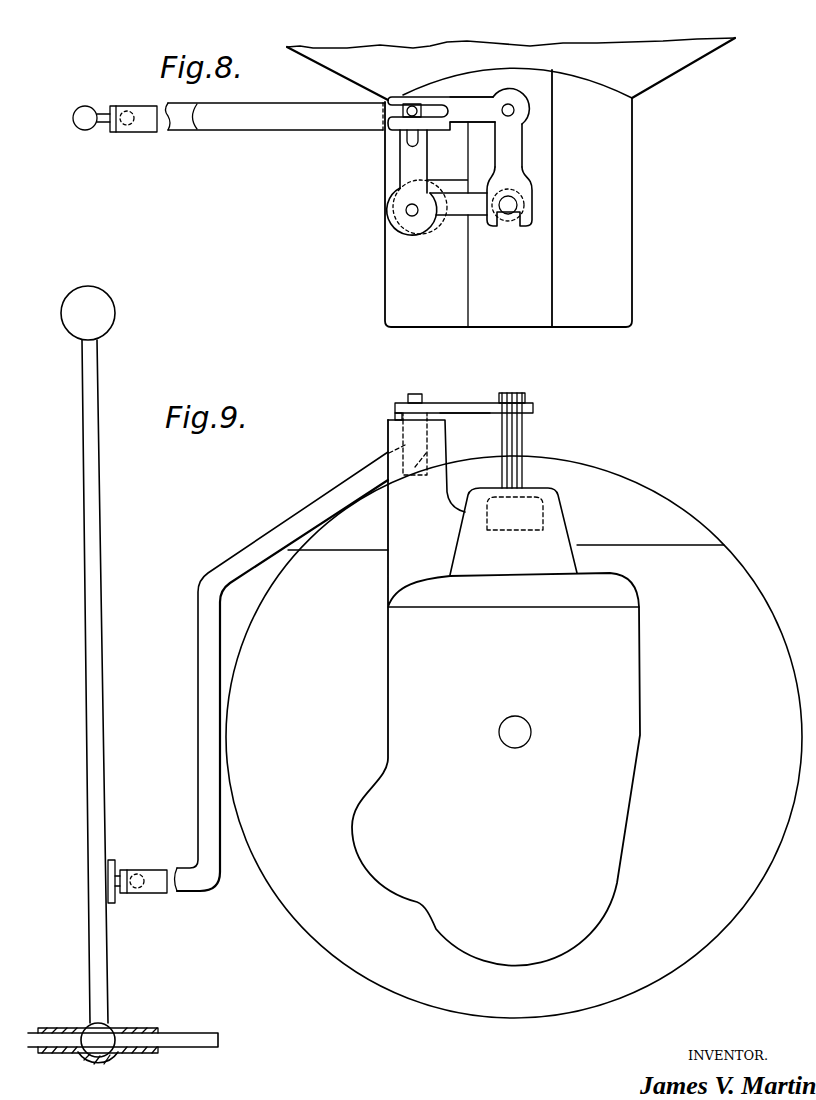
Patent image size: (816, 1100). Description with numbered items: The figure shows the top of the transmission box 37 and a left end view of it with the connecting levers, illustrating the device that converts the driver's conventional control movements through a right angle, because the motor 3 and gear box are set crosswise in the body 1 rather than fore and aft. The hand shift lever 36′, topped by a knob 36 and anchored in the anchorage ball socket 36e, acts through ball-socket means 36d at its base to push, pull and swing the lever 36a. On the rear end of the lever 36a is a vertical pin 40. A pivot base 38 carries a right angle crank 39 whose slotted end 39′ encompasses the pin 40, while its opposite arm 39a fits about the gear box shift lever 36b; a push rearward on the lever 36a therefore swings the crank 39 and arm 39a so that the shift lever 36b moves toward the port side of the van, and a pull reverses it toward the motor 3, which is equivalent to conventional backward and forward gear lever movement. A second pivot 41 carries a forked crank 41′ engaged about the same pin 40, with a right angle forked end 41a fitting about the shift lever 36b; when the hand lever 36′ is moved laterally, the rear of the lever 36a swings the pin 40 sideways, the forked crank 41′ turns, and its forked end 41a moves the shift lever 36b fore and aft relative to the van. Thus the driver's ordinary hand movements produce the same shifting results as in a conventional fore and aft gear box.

In FIG. 8, the motor 3 is at (677, 63).
In FIG. 9, the hand knob of control lever 36 is at (108, 318).
In FIG. 8, the shift lever 36′ is at (80, 110).
In FIG. 9, the shift lever 36′ is at (93, 480).
In FIG. 8, the lever 36a is at (242, 122).
In FIG. 9, the lever 36a is at (200, 826).
In FIG. 8, the gear box shift lever 36b is at (514, 205).
In FIG. 9, the gear box shift lever 36b is at (517, 440).
In FIG. 9, the ball-socket means 36d is at (137, 874).
In FIG. 9, the anchorage ball socket 36e is at (92, 1036).
In FIG. 9, the body 1 is at (140, 1058).
In FIG. 8, the transmission box 37 is at (623, 200).
In FIG. 9, the transmission box 37 is at (628, 652).
In FIG. 8, the pivot base 38 is at (448, 227).
In FIG. 9, the pivot base 38 is at (388, 432).
In FIG. 8, the right angle crank 39 is at (420, 160).
In FIG. 9, the right angle crank 39 is at (395, 413).
In FIG. 8, the slotted end 39′ is at (398, 108).
In FIG. 8, the arm 39a is at (473, 216).
In FIG. 9, the arm 39a is at (477, 413).
In FIG. 8, the vertical pin 40 is at (413, 108).
In FIG. 9, the vertical pin 40 is at (418, 394).
In FIG. 8, the pivot 41 is at (514, 108).
In FIG. 8, the forked crank 41′ is at (473, 103).
In FIG. 8, the forked end 41a is at (513, 147).
In FIG. 9, the forked end 41a is at (526, 402).